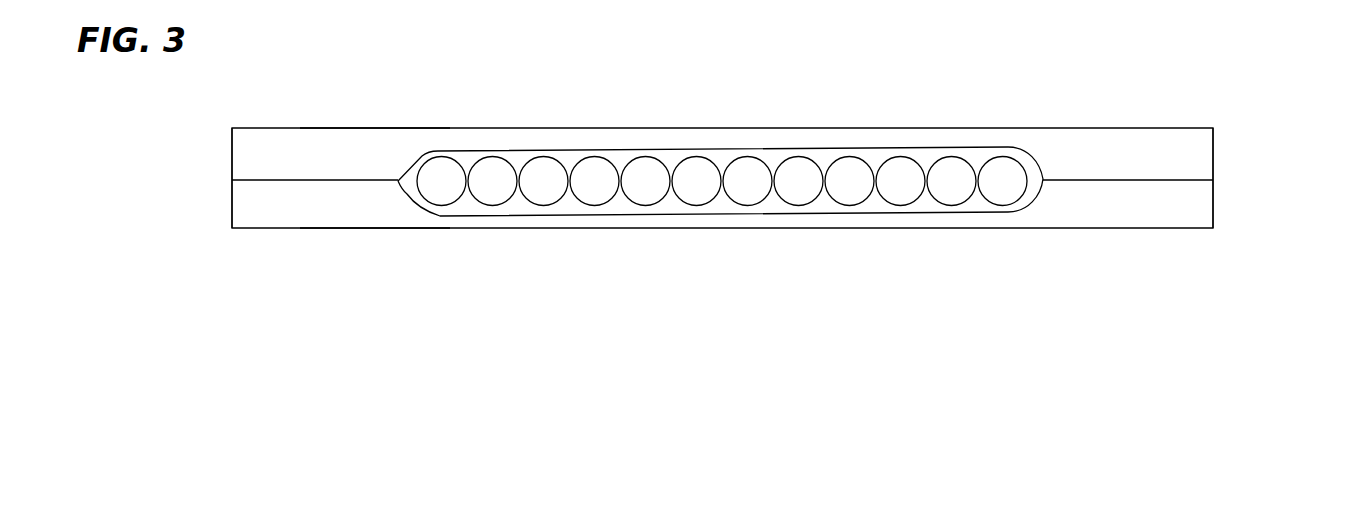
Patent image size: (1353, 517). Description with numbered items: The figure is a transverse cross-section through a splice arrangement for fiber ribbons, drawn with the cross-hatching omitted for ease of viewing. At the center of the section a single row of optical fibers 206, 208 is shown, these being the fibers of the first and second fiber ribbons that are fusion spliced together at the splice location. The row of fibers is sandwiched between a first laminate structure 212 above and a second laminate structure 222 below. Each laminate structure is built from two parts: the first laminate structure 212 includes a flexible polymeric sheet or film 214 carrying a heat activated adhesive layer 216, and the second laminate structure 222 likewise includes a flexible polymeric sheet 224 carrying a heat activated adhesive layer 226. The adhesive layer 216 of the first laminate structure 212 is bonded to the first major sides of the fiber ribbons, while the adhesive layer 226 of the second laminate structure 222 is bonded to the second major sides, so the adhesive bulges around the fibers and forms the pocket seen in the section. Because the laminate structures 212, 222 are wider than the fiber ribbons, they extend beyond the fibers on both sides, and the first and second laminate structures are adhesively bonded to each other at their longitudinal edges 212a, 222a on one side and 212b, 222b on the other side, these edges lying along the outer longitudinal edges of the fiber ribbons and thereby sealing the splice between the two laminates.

The first laminate structure 212 is at (1099, 128).
The second laminate structure 222 is at (1100, 229).
The longitudinal edge of first laminate structure 212a is at (232, 160).
The longitudinal edge of first laminate structure 212b is at (1190, 150).
The longitudinal edge of second laminate structure 222a is at (232, 206).
The longitudinal edge of second laminate structure 222b is at (1196, 201).
The flexible polymeric sheet 214 is at (374, 150).
The flexible polymeric sheet 224 is at (364, 209).
The heat activated adhesive layer 216 is at (923, 158).
The heat activated adhesive layer 226 is at (720, 129).
The optical fibers 206 is at (722, 228).
The optical fibers 208 is at (848, 181).